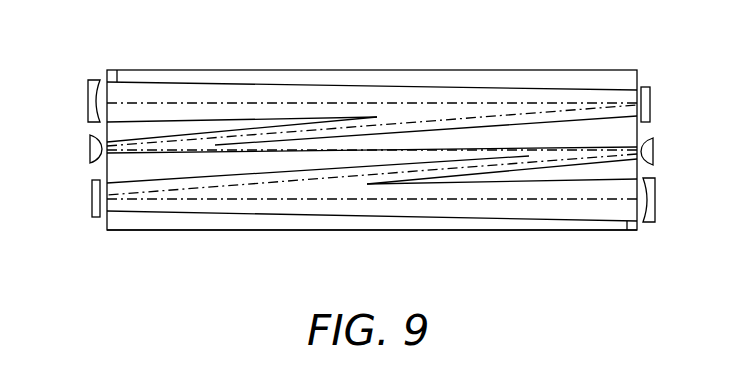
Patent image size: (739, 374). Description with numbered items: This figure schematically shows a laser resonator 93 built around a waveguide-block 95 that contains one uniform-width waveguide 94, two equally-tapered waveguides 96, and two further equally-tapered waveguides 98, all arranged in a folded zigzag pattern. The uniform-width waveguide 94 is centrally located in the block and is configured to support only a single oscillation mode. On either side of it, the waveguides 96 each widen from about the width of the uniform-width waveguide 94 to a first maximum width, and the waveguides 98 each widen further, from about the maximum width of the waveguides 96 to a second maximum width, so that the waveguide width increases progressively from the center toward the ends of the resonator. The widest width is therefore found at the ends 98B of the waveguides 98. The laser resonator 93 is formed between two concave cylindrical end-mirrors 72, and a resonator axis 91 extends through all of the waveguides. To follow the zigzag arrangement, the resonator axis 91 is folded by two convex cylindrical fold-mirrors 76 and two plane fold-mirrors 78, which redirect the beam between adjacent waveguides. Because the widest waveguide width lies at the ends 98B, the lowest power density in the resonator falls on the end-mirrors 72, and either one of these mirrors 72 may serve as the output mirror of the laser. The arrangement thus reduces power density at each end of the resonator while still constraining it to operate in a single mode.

The concave cylindrical mirror 72 is at (88, 88).
The convex cylindrical fold-mirror 76 is at (88, 147).
The plane fold-mirror 78 is at (90, 209).
The resonator axis 91 is at (390, 103).
The laser resonator 93 is at (512, 278).
The uniform-width waveguide 94 is at (458, 137).
The waveguide-block 95 is at (316, 238).
The equally-tapered waveguide 96 is at (176, 124).
The equally-tapered waveguide 98 is at (228, 76).
The end of waveguide 98B is at (117, 82).